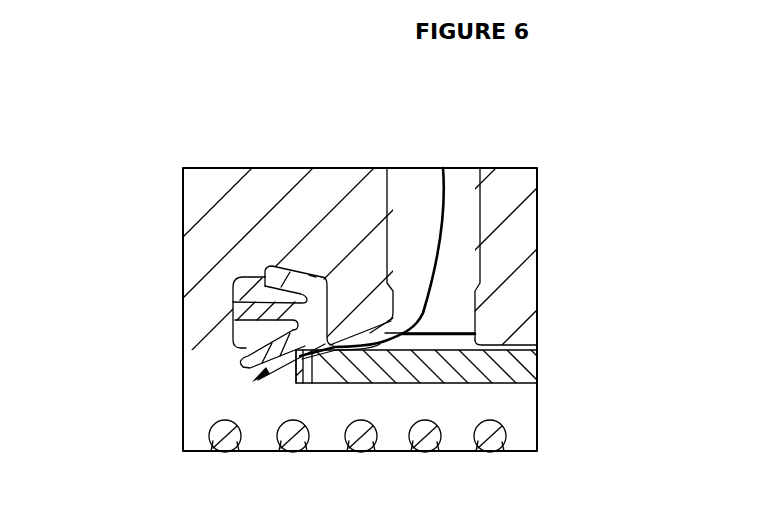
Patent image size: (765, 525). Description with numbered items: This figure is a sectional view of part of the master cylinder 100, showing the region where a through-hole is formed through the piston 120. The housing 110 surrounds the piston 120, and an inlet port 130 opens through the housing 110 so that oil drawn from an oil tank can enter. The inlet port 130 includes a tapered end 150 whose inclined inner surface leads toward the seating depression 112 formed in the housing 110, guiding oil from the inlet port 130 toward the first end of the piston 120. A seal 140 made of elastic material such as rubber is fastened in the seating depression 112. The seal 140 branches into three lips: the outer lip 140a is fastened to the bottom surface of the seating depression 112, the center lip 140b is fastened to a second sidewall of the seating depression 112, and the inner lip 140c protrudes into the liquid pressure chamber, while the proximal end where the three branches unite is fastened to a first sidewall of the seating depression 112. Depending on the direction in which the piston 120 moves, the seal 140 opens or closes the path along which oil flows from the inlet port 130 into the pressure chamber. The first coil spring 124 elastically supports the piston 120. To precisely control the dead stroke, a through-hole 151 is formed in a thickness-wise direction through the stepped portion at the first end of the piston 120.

The master cylinder 100 is at (585, 147).
The housing 110 is at (261, 190).
The seating depression 112 is at (315, 275).
The piston 120 is at (513, 367).
The first coil spring 124 is at (489, 438).
The inlet port 130 is at (435, 188).
The seal 140 is at (72, 268).
The outer lip 140a is at (246, 278).
The center lip 140b is at (247, 310).
The inner lip 140c is at (242, 361).
The tapered end 150 is at (400, 334).
The through-hole 151 is at (296, 374).